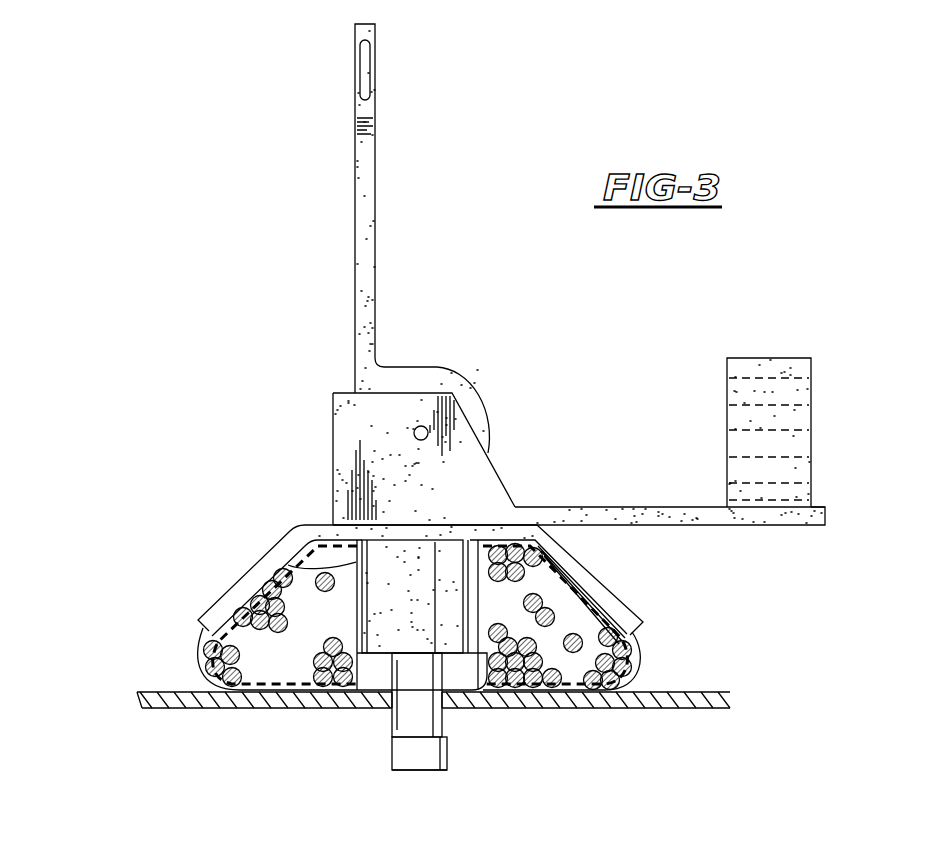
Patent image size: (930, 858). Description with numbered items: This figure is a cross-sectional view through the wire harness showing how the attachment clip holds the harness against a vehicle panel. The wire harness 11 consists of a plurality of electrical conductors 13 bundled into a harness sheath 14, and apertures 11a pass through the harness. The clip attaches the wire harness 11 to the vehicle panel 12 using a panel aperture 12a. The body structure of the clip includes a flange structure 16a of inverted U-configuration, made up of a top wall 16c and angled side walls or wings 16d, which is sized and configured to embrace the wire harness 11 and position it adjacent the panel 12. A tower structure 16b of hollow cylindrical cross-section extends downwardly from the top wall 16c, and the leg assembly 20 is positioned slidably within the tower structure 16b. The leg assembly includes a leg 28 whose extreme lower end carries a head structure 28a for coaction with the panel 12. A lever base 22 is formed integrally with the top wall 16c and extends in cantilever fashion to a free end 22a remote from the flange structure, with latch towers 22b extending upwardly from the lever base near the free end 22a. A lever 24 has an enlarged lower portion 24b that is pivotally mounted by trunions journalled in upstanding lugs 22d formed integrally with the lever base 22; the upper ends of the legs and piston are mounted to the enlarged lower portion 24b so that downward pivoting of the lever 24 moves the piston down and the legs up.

The wire harness 11 is at (172, 663).
The apertures 11a is at (288, 567).
The vehicle panel 12 is at (205, 725).
The panel aperture 12a is at (400, 710).
The electrical conductors 13 is at (634, 657).
The harness sheath 14 is at (630, 689).
The flange structure 16a is at (610, 562).
The tower structure 16b is at (430, 612).
The top wall 16c is at (316, 524).
The angled side walls or wings 16d is at (633, 612).
The leg assembly 20 is at (462, 755).
The lever base 22 is at (604, 496).
The free end 22a is at (826, 523).
The latch towers 22b is at (770, 357).
The upstanding lugs 22d is at (487, 505).
The lever 24 is at (350, 183).
The enlarged lower portion 24b is at (442, 367).
The leg 28 is at (434, 712).
The head structure 28a is at (411, 762).